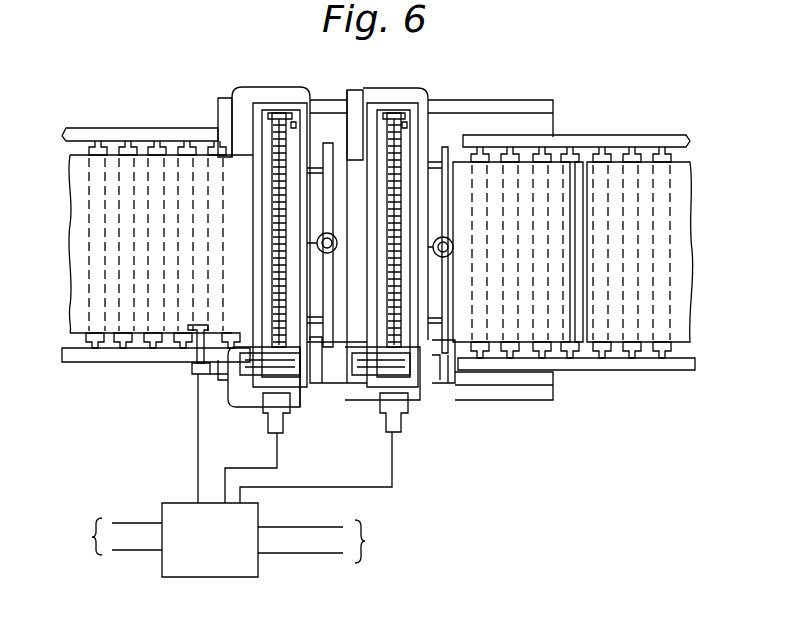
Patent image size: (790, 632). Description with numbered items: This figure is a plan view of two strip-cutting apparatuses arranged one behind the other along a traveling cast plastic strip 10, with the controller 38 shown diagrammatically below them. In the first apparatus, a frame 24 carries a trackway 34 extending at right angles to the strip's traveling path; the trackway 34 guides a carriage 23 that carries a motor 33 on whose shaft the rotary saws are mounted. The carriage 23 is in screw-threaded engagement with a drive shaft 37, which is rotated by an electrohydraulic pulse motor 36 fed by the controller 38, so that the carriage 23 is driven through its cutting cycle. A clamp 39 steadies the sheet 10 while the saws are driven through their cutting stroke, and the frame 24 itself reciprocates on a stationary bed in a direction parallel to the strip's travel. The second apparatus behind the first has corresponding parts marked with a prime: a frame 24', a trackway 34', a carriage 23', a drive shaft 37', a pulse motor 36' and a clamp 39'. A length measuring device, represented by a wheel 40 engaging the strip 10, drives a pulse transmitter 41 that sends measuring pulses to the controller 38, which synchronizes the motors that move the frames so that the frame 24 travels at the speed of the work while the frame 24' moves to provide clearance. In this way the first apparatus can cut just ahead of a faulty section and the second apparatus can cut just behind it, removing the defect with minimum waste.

The strip 10 is at (110, 335).
The carriage 23 is at (277, 412).
The carriage 23' is at (373, 409).
The frame 24 is at (282, 195).
The frame 24' is at (450, 216).
The motor 33 is at (240, 407).
The trackway 34 is at (238, 240).
The trackway 34' is at (370, 220).
The electrohydraulic pulse motor 36 is at (257, 448).
The electrohydraulic pulse motor 36' is at (347, 425).
The screw-threaded drive shaft 37 is at (255, 230).
The screw-threaded drive shaft 37' is at (369, 230).
The controller 38 is at (222, 570).
The clamp 39 is at (338, 263).
The clamp 39' is at (450, 267).
The wheel 40 is at (203, 326).
The pulse transmitter 41 is at (194, 376).